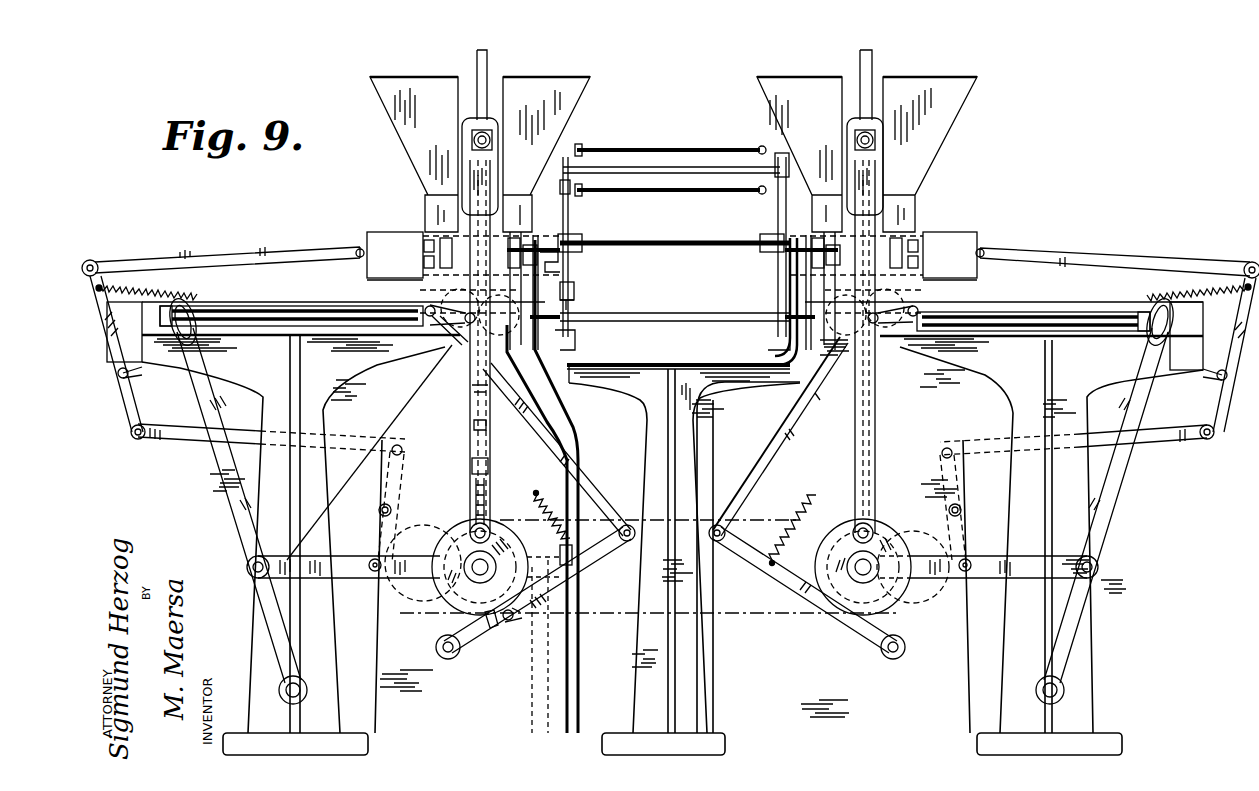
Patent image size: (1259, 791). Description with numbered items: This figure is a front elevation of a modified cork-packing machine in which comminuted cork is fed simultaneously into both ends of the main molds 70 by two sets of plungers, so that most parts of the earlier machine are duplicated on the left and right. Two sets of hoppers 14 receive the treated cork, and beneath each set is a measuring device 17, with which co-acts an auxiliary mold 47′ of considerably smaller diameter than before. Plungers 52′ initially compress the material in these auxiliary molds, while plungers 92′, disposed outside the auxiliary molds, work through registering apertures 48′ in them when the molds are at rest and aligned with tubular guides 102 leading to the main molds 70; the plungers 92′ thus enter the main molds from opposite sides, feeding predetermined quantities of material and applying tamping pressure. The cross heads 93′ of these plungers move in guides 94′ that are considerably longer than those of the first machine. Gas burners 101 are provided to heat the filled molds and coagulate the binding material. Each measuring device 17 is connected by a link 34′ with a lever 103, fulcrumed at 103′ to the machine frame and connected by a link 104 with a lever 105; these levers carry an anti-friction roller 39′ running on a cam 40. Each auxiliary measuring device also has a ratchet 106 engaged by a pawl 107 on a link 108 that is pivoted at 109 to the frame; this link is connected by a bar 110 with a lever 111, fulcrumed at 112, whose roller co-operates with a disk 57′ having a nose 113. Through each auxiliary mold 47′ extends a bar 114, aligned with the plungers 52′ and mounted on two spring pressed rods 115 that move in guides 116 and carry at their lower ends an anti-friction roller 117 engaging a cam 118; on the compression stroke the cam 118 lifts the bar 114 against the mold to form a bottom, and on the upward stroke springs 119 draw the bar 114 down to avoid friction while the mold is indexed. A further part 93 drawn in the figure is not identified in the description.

The hoppers 14 is at (392, 116).
The plungers 52′ is at (487, 100).
The measuring device 17 is at (413, 232).
The link 34′ is at (235, 255).
The cross heads 93′ is at (205, 297).
The guides 94′ is at (272, 305).
The plungers 92′ is at (320, 305).
The lever 103 is at (110, 335).
The fulcrum 103′ is at (118, 378).
The gas burners 101 is at (668, 150).
The auxiliary mold 47′ is at (572, 284).
The tubular guides 102 is at (576, 302).
The main molds 70 is at (688, 313).
The pivot 109 is at (462, 335).
The pawl 107 is at (432, 305).
The ratchet 106 is at (440, 342).
The link 108 is at (425, 360).
The apertures 48′ is at (505, 335).
The bar 110 is at (530, 425).
The bar 114 is at (472, 390).
The spring pressed rods 115 is at (472, 428).
The guides 116 is at (472, 462).
The springs 119 is at (476, 494).
The anti-friction roller 117 is at (470, 530).
The cam 40 is at (408, 538).
The anti-friction roller 39′ is at (365, 580).
The link 104 is at (193, 445).
The lever 105 is at (392, 482).
The slotted arm 93 is at (671, 500).
The cam 118 is at (515, 530).
The lever 111 is at (598, 562).
The fulcrum 112 is at (436, 648).
The nose 113 is at (492, 630).
The disk 57′ is at (460, 614).